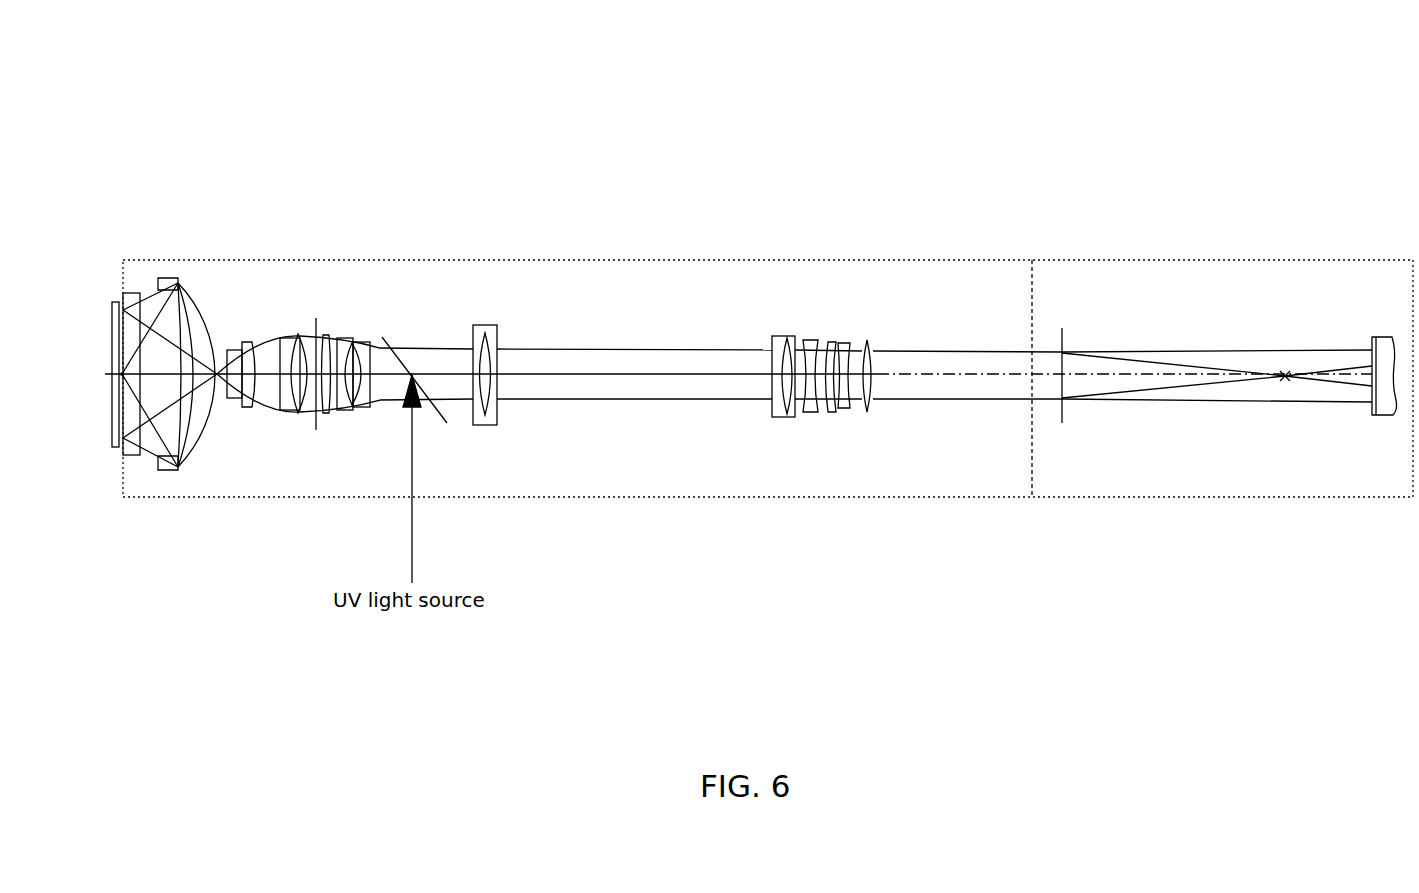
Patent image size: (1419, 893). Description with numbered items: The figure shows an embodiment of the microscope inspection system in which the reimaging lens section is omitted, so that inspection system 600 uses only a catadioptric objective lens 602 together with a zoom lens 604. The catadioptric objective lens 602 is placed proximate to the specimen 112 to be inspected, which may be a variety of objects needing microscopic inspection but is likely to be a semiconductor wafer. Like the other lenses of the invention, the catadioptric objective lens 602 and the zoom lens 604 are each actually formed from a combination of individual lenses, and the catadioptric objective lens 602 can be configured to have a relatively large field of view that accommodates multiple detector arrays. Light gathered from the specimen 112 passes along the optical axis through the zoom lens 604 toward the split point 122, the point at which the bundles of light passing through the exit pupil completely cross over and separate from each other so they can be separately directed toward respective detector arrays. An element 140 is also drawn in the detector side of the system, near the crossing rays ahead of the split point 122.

The inspection system 600 is at (884, 60).
The catadioptric objective lens 602 is at (513, 268).
The zoom lens 604 is at (876, 268).
The specimen 112 is at (110, 422).
The split point 122 is at (1286, 374).
The aperture stop 140 is at (1063, 420).